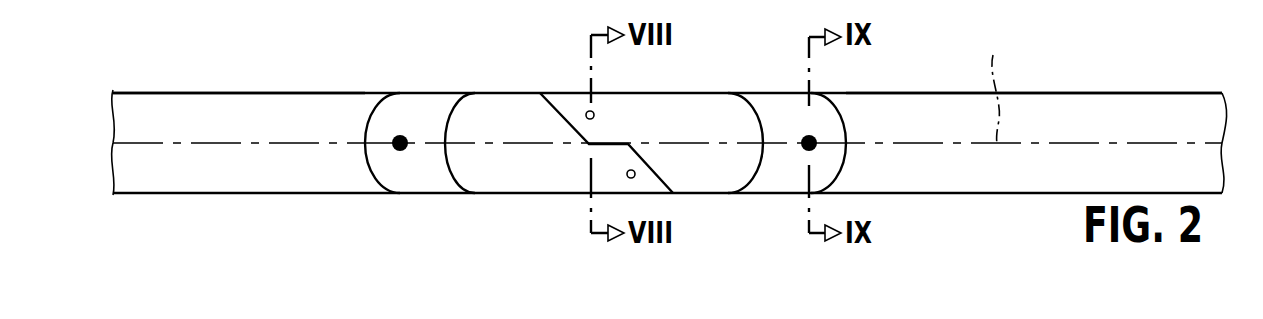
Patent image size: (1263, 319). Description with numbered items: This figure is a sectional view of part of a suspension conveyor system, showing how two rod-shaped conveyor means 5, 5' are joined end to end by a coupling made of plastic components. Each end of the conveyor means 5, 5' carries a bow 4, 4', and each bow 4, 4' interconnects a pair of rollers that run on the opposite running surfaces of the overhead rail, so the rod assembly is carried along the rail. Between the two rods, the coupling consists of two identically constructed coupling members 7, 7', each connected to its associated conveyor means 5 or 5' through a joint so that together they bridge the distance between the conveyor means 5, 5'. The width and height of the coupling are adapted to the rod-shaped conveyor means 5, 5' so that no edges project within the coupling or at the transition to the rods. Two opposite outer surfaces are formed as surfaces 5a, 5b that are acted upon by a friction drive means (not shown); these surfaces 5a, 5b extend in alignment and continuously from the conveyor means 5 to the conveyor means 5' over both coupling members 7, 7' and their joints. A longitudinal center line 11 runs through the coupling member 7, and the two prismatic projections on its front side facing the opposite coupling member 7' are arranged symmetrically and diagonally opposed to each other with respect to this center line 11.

The bow 4 is at (869, 171).
The bow 4' is at (367, 171).
The conveyor means 5 is at (670, 143).
The conveyor means 5' is at (238, 142).
The surface acted upon by friction drive means 5a is at (1032, 93).
The surface acted upon by friction drive means 5b is at (330, 93).
The coupling member 7 is at (753, 170).
The coupling member 7' is at (470, 169).
The longitudinal center line 11 is at (1002, 83).